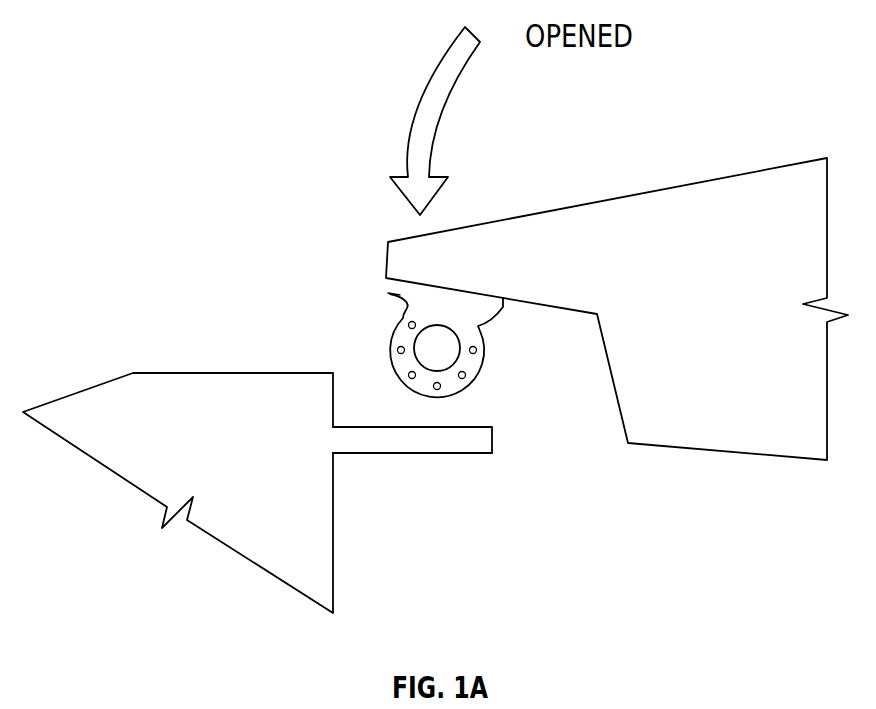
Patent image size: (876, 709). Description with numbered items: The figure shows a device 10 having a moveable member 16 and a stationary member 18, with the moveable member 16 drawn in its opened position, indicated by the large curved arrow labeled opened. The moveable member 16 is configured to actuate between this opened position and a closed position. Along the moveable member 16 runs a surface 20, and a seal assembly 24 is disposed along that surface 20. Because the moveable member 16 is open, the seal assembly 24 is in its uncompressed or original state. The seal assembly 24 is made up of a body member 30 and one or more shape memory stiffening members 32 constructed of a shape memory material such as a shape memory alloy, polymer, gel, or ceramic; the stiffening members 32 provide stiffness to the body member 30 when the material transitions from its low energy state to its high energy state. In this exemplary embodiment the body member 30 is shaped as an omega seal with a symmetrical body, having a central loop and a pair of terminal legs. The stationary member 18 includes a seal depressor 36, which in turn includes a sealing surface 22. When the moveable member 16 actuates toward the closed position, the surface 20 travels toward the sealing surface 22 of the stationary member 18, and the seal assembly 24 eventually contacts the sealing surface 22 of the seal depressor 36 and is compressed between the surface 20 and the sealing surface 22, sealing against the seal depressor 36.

The device 10 is at (252, 120).
The moveable member 16 is at (748, 185).
The stationary member 18 is at (118, 457).
The surface 20 is at (522, 302).
The sealing surface 22 is at (380, 425).
The seal assembly 24 is at (512, 361).
The body member 30 is at (391, 294).
The shape memory stiffening members 32 is at (464, 376).
The seal depressor 36 is at (400, 443).